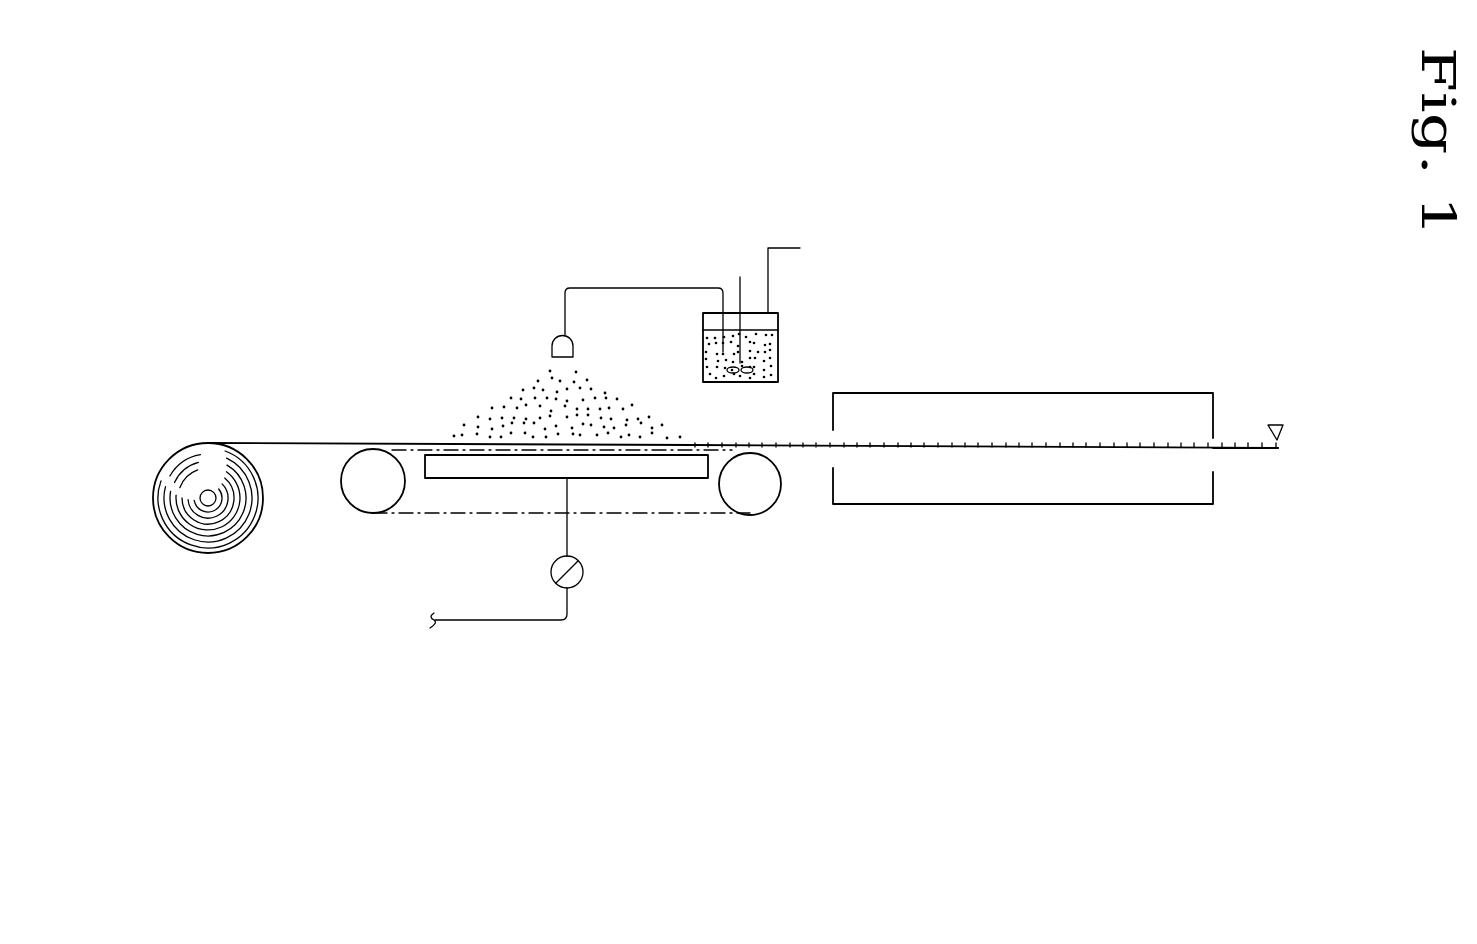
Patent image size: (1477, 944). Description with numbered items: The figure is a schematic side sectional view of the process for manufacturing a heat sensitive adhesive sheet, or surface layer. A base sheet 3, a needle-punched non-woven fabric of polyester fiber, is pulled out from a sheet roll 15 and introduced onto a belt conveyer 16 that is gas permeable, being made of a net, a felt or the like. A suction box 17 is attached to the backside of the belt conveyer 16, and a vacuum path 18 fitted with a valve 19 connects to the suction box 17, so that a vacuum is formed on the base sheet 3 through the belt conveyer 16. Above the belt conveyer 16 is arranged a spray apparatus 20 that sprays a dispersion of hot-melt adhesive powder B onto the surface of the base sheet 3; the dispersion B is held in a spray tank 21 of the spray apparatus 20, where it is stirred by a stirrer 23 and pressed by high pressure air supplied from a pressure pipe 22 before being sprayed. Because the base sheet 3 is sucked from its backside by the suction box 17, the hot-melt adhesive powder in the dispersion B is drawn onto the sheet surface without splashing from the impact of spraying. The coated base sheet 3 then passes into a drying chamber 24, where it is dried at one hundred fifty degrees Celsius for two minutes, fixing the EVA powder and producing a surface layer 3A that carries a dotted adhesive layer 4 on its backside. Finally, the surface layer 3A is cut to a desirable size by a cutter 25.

The base sheet 3 is at (290, 442).
The surface layer 3A is at (1253, 452).
The dotted adhesive layer 4 is at (1227, 448).
The sheet roll 15 is at (232, 550).
The belt conveyer 16 is at (663, 512).
The suction box 17 is at (500, 478).
The vacuum path 18 is at (530, 620).
The valve 19 is at (585, 578).
The spray apparatus 20 is at (690, 240).
The spray tank 21 is at (780, 338).
The pressure pipe 22 is at (770, 293).
The stirrer 23 is at (745, 283).
The drying chamber 24 is at (1037, 405).
The cutter 25 is at (1283, 425).
The dispersion of hot-melt adhesive powder B is at (645, 405).